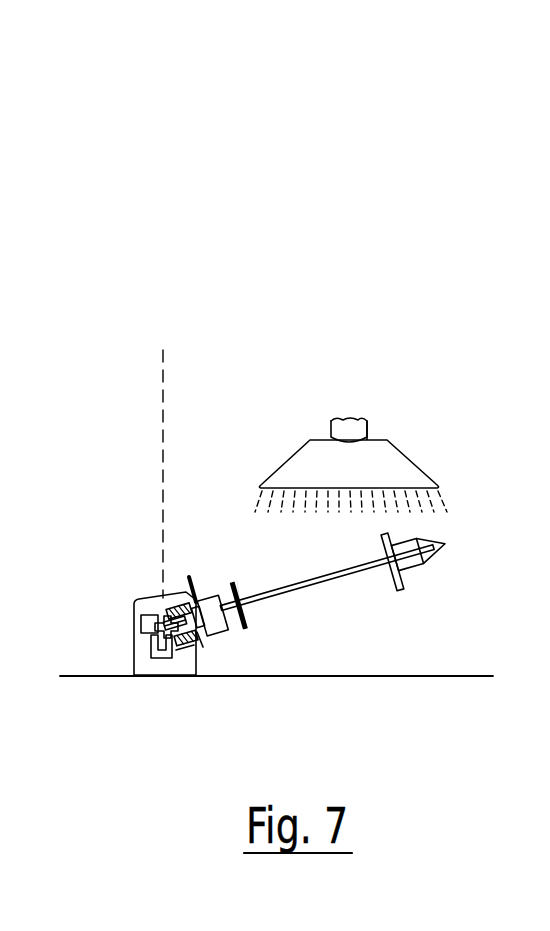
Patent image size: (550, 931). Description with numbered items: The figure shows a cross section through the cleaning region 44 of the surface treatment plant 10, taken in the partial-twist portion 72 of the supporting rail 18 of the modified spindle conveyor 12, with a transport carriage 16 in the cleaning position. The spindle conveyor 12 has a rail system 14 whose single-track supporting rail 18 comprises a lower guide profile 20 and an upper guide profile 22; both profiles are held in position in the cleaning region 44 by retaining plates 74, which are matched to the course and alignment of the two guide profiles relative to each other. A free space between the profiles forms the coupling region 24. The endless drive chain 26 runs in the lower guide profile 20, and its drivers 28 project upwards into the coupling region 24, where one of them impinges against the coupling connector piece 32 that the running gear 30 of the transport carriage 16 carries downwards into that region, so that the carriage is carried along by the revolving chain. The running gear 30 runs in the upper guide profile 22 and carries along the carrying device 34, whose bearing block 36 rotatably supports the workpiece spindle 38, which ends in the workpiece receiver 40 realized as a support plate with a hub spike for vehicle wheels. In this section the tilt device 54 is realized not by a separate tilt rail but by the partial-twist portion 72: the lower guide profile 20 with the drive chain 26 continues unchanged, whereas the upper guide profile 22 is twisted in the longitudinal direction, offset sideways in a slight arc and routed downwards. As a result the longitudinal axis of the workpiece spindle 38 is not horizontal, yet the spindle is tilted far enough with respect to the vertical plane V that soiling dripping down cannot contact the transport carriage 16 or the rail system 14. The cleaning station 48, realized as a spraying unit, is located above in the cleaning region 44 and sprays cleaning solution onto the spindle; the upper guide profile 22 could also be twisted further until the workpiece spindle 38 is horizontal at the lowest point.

The surface treatment plant 10 is at (457, 156).
The spindle conveyor 12 is at (482, 246).
The rail system 14 is at (130, 678).
The transport carriage 16 is at (203, 583).
The supporting rail 18 is at (205, 646).
The lower guide profile 20 is at (173, 648).
The upper guide profile 22 is at (178, 603).
The coupling region 24 is at (162, 615).
The drive chain 26 is at (188, 656).
The driver 28 is at (166, 628).
The running gear 30 is at (208, 658).
The coupling connector piece 32 is at (151, 609).
The carrying device 34 is at (250, 591).
The bearing block 36 is at (210, 600).
The workpiece spindle 38 is at (368, 574).
The workpiece receiver 40 is at (411, 580).
The cleaning region 44 is at (323, 165).
The cleaning station 48 is at (396, 418).
The tilt device 54 is at (143, 510).
The partial-twist portion 72 is at (174, 672).
The retaining plate 74 is at (150, 668).
The vertical plane V is at (165, 374).